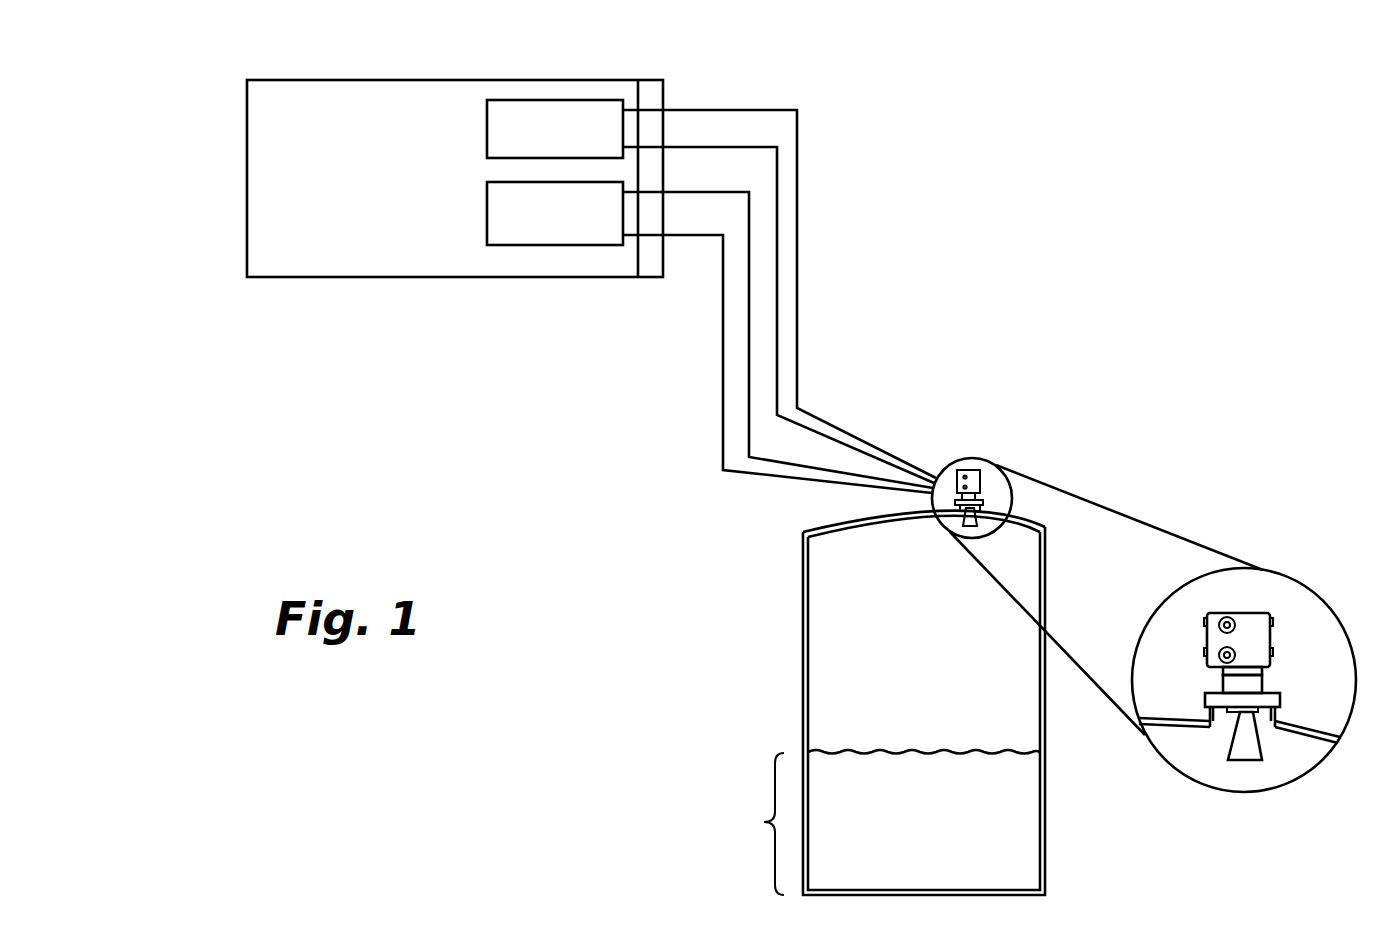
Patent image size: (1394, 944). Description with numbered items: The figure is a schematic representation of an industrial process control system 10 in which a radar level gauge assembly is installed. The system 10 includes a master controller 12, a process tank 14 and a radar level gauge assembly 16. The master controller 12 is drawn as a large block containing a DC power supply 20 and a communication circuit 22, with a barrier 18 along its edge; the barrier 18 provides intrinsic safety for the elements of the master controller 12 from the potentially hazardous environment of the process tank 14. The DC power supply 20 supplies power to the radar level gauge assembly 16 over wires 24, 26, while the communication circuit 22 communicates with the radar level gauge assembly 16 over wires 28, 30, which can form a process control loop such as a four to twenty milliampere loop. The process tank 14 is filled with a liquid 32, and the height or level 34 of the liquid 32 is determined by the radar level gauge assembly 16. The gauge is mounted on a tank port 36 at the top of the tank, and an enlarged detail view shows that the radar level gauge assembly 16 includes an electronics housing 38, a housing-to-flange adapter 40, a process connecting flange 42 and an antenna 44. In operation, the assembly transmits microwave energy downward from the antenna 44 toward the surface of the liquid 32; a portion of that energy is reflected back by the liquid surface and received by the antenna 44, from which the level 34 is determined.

The system 10 is at (1172, 387).
The master controller 12 is at (268, 80).
The process tank 14 is at (800, 597).
The radar level gauge assembly 16 is at (960, 458).
The barrier 18 is at (650, 82).
The DC power supply 20 is at (492, 100).
The communication circuit 22 is at (540, 246).
The wire 24 is at (680, 110).
The wire 26 is at (688, 147).
The wire 28 is at (675, 192).
The wire 30 is at (700, 237).
The liquid 32 is at (1025, 802).
The level 34 is at (757, 824).
The tank port 36 is at (1283, 722).
The electronics housing 38 is at (1205, 632).
The housing-to-flange adapter 40 is at (1222, 683).
The process connecting flange 42 is at (1205, 700).
The antenna 44 is at (1232, 740).